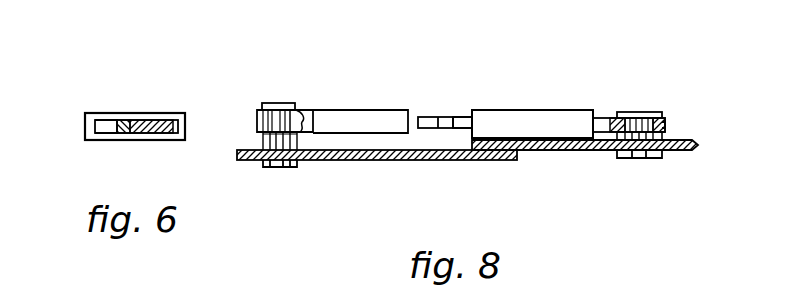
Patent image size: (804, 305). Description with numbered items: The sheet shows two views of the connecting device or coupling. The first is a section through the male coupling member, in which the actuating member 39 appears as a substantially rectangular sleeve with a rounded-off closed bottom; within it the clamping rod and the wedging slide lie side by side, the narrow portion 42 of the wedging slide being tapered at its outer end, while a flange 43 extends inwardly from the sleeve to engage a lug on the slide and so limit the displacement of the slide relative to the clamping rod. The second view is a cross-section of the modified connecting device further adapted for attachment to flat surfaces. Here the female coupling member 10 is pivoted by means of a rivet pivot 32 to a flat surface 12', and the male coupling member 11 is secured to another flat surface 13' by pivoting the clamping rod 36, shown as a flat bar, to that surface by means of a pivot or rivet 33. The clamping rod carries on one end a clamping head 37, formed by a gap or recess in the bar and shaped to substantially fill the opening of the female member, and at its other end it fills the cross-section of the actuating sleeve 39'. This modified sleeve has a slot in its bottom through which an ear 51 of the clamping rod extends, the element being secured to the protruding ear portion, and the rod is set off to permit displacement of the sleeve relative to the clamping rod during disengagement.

In FIG. 8, the female coupling member 10 is at (347, 88).
In FIG. 8, the male coupling member 11 is at (539, 94).
In FIG. 8, the flat surface 12' is at (377, 177).
In FIG. 8, the flat surface 13' is at (585, 175).
In FIG. 8, the rivet pivot 32 is at (276, 103).
In FIG. 8, the pivot or rivet 33 is at (640, 112).
In FIG. 6, the clamping rod 36 is at (152, 120).
In FIG. 8, the clamping rod 36 is at (605, 118).
In FIG. 8, the clamping head 37 is at (429, 117).
In FIG. 6, the actuating member 39 is at (111, 107).
In FIG. 8, the actuating sleeve 39' is at (532, 99).
In FIG. 6, the narrow portion 42 is at (125, 120).
In FIG. 8, the narrow portion 42 is at (462, 117).
In FIG. 6, the flange 43 is at (92, 125).
In FIG. 8, the ear 51 is at (665, 125).